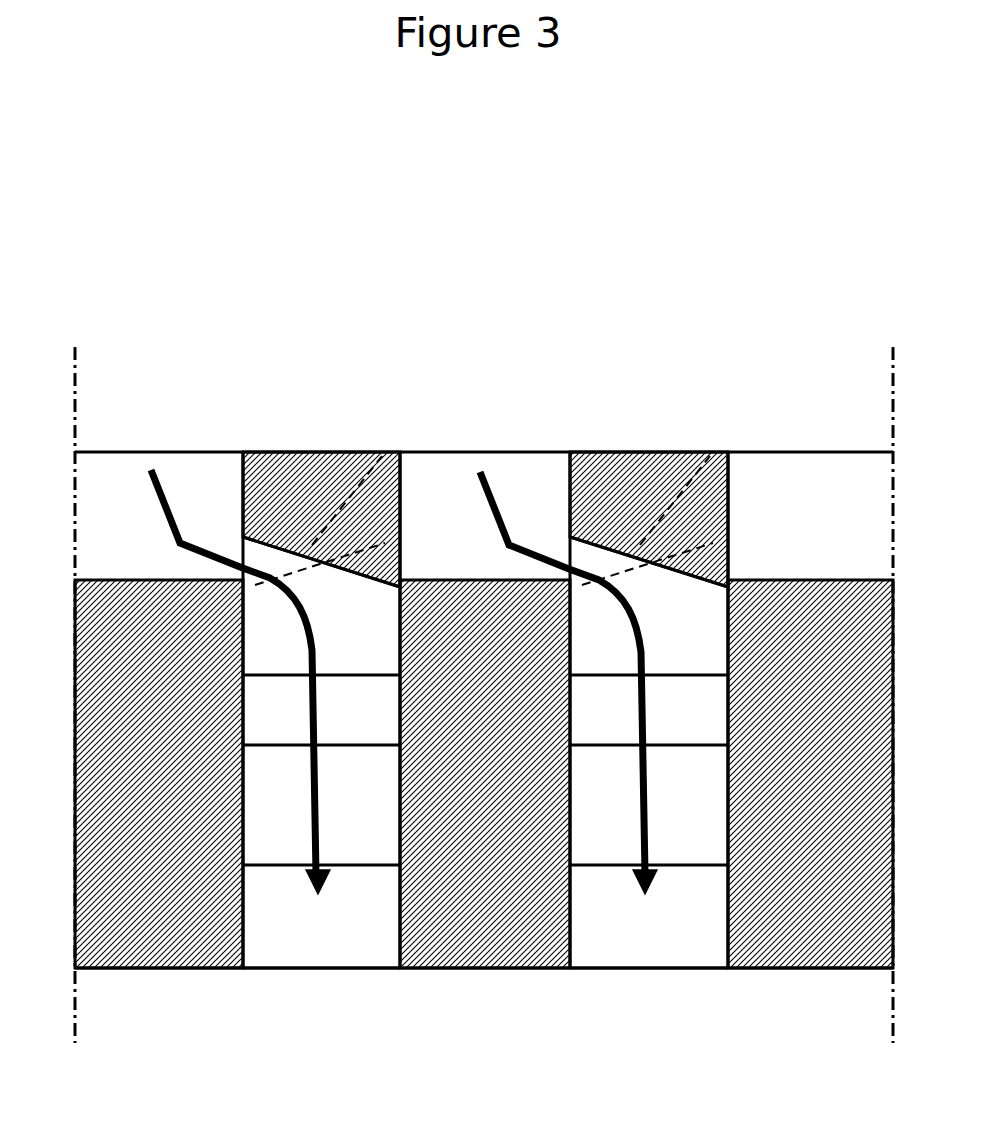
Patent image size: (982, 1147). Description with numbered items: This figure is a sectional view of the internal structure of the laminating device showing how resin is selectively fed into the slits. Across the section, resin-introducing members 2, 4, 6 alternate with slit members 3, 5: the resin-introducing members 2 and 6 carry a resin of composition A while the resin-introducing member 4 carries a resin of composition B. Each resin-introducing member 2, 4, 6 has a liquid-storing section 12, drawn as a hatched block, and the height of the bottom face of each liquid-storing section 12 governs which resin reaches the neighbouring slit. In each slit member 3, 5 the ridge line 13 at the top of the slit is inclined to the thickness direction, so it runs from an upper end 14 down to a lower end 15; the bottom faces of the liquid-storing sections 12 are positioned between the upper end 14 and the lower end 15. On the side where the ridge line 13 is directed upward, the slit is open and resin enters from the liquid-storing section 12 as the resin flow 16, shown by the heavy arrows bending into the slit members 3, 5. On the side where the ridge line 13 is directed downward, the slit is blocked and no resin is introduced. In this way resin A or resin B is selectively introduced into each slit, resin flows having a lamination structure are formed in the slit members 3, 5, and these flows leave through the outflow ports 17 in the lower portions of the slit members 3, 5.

The resin-introducing member 2 is at (159, 414).
The slit member 3 is at (321, 414).
The resin-introducing member 4 is at (485, 414).
The slit member 5 is at (649, 414).
The resin-introducing member 6 is at (810, 414).
The liquid-storing section 12 is at (140, 580).
The ridge line of the top of the slits 13 is at (372, 452).
The upper end of the ridge line 14 is at (243, 537).
The lower end of the ridge line 15 is at (394, 584).
The resin flow 16 is at (153, 488).
The outflow port 17 is at (320, 942).